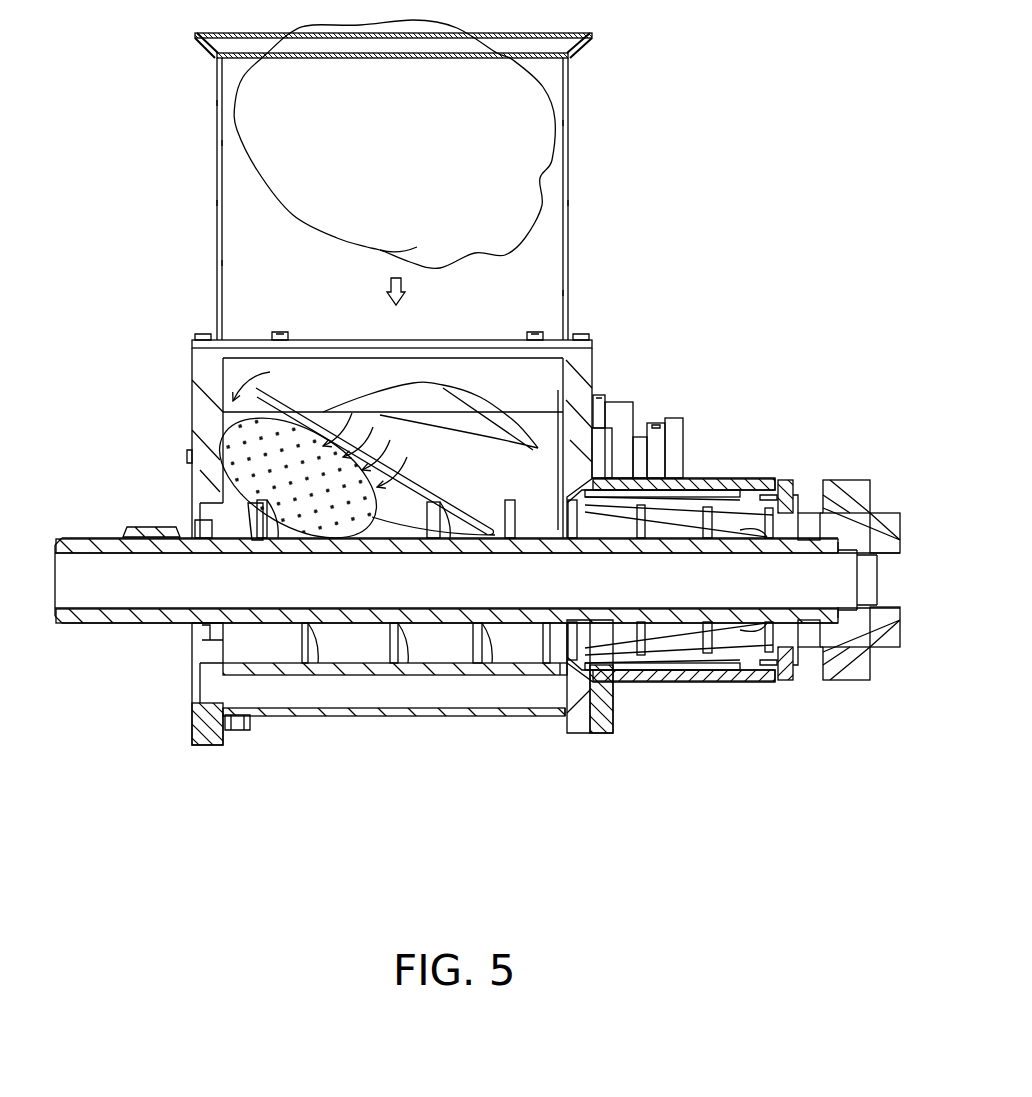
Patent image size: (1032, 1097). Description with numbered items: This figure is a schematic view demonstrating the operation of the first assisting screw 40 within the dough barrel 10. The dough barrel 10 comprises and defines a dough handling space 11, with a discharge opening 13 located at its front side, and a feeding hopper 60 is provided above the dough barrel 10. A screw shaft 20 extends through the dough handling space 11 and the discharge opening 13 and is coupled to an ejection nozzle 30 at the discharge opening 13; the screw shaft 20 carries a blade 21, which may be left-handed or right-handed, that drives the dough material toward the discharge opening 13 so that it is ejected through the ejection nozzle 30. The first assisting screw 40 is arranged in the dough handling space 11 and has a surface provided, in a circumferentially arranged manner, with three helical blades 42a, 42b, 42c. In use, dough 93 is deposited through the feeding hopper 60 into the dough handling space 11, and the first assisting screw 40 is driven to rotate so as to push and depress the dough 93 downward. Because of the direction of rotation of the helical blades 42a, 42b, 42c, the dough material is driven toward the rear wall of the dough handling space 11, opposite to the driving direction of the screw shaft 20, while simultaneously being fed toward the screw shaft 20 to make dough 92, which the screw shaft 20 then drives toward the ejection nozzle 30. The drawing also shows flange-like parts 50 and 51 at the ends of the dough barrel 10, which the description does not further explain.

The dough barrel 10 is at (297, 735).
The dough handling space 11 is at (433, 657).
The discharge opening 13 is at (565, 640).
The screw shaft 20 is at (98, 622).
The blade 21 is at (394, 622).
The ejection nozzle 30 is at (733, 478).
The first assisting screw 40 is at (222, 428).
The helical blade 42a is at (485, 410).
The helical blade 42b is at (255, 390).
The helical blade 42c is at (282, 512).
The outlet flange 50 is at (608, 733).
The inlet flange 51 is at (197, 653).
The feeding hopper 60 is at (217, 202).
The dough 92 is at (232, 446).
The dough 93 is at (536, 127).